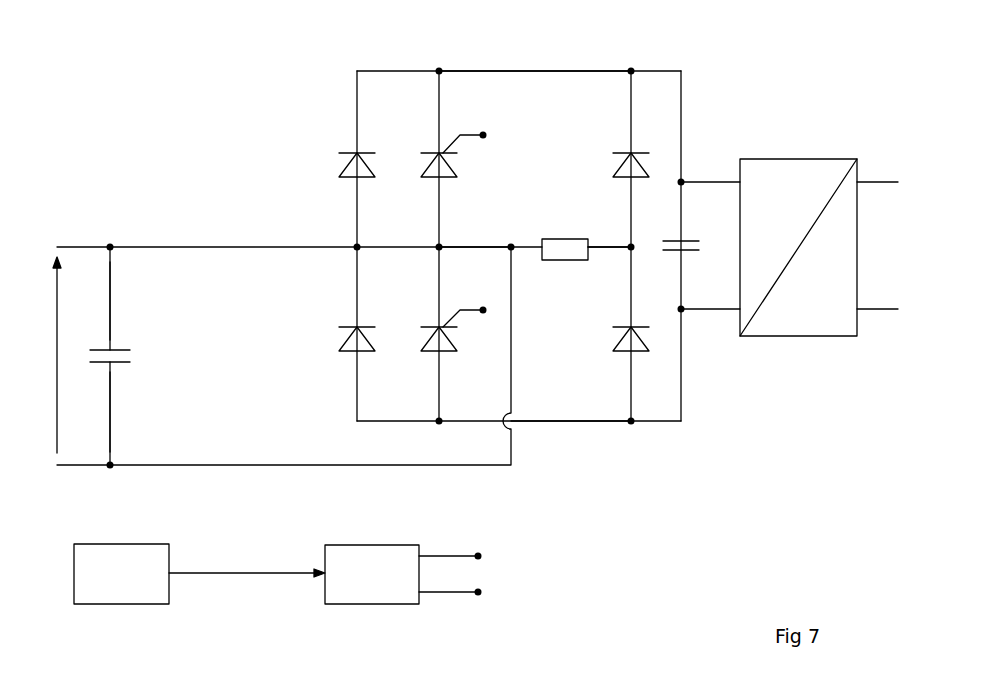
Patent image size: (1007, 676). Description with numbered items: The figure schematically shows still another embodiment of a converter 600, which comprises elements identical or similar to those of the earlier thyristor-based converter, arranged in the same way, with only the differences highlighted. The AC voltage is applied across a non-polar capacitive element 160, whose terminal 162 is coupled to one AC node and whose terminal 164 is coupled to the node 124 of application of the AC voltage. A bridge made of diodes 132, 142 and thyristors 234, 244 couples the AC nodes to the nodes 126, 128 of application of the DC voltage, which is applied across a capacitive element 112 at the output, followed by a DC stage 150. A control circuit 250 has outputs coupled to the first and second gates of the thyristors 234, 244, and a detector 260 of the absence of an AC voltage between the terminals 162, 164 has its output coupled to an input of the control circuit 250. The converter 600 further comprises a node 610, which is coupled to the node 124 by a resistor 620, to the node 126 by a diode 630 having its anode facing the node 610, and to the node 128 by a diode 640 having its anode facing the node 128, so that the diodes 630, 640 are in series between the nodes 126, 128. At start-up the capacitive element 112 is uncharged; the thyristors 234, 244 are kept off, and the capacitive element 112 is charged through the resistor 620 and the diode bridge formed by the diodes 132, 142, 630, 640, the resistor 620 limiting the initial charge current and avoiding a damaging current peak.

The converter 600 is at (171, 137).
The node of application of DC voltage 126 is at (441, 70).
The node of application of DC voltage 128 is at (578, 422).
The node of application of AC voltage 124 is at (476, 246).
The node 610 is at (629, 245).
The diode 132 is at (350, 172).
The diode 142 is at (350, 343).
The thyristor 234 is at (425, 170).
The thyristor 244 is at (425, 345).
The diode 630 is at (618, 170).
The diode 640 is at (625, 349).
The resistor 620 is at (568, 252).
The capacitive element 112 is at (688, 253).
The DC converter 150 is at (778, 158).
The capacitive element 160 is at (123, 365).
The terminal 162 is at (110, 303).
The terminal 164 is at (110, 438).
The detector 260 is at (150, 590).
The control circuit 250 is at (388, 595).